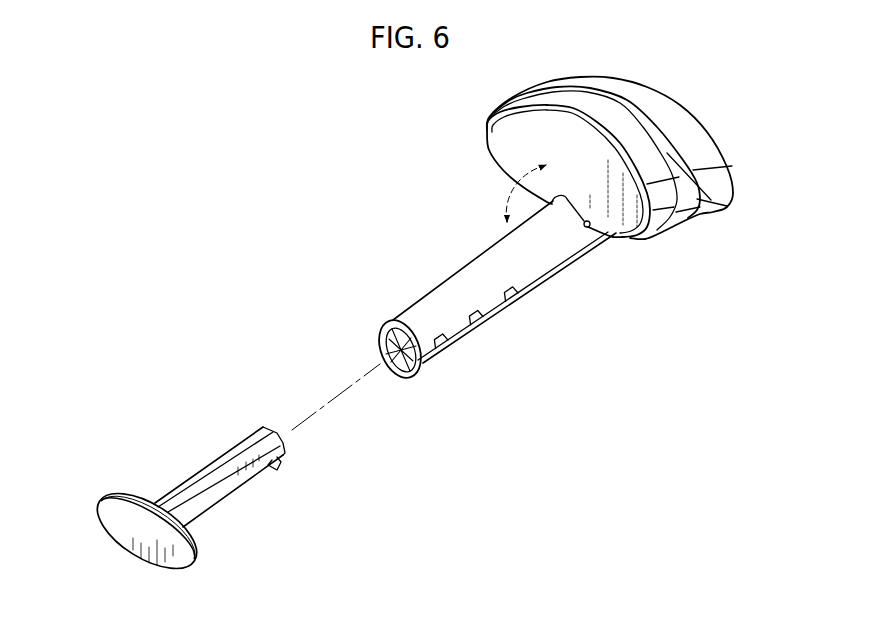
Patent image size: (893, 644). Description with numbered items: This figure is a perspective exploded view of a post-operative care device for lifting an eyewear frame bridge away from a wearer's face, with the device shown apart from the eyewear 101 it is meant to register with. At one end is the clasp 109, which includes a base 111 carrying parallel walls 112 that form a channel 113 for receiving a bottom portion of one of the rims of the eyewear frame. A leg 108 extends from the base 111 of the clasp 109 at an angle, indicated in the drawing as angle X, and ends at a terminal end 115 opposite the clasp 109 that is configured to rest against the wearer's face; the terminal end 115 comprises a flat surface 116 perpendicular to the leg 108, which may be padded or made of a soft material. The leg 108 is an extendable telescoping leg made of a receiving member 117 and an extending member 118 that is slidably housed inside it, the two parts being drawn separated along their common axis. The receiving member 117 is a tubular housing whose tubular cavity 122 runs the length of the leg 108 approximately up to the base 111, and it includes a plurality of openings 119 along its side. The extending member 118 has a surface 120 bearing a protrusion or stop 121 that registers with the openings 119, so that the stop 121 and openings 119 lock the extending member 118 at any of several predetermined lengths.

The eyewear 101 is at (179, 227).
The leg 108 is at (652, 552).
The clasp 109 is at (740, 295).
The base 111 is at (683, 216).
The parallel walls 112 is at (542, 160).
The channel 113 is at (692, 184).
The terminal end 115 is at (258, 390).
The flat surface 116 is at (120, 522).
The receiving member 117 is at (470, 278).
The extending member 118 is at (197, 480).
The plurality of openings 119 is at (442, 361).
The surface 120 is at (217, 507).
The stop 121 is at (273, 473).
The tubular cavity 122 is at (371, 353).